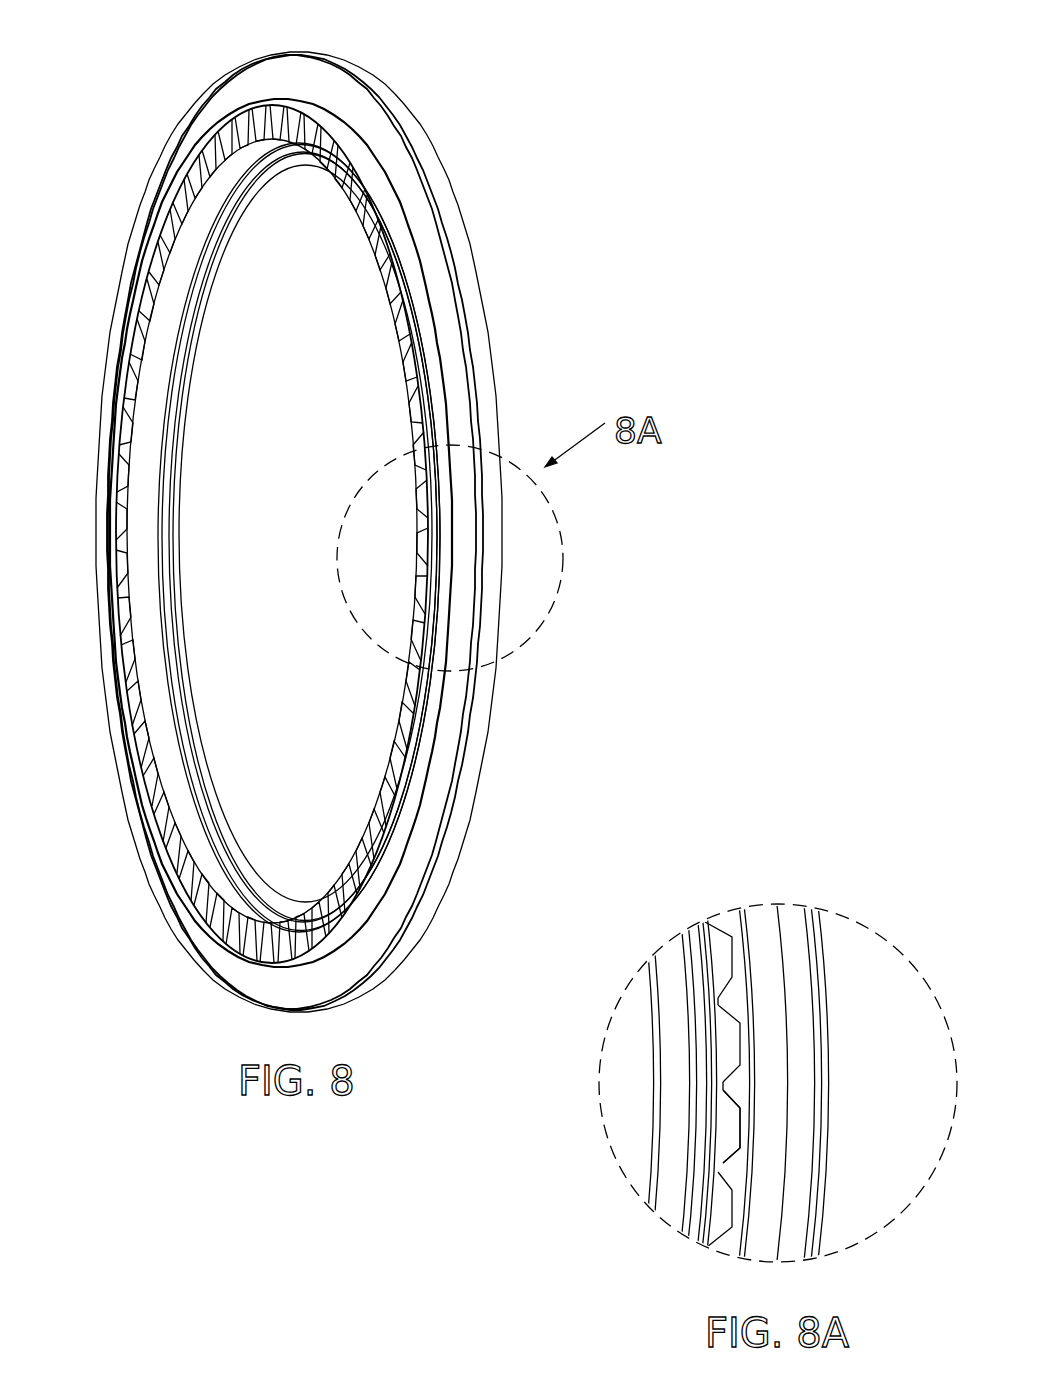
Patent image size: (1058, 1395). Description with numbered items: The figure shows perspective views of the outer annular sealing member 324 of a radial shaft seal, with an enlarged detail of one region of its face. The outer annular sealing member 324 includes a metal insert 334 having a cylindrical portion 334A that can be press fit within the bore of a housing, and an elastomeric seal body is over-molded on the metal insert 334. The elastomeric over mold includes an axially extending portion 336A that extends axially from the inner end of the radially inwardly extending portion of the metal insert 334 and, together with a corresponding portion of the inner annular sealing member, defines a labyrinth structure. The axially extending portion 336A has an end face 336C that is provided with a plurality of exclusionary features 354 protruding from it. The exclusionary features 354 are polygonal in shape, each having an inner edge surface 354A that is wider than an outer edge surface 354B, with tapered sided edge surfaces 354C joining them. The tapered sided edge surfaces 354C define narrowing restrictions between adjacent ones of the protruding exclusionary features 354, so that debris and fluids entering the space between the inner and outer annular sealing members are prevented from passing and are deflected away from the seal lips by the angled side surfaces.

In FIG. 8, the outer annular sealing member 324 is at (284, 508).
In FIG. 8, the metal insert 334 is at (106, 458).
In FIG. 8, the axially extending portion 336A is at (170, 790).
In FIG. 8A, the axially extending portion 336A is at (745, 920).
In FIG. 8A, the end face 336C is at (717, 922).
In FIG. 8, the exclusionary features 354 is at (395, 322).
In FIG. 8A, the exclusionary features 354 is at (715, 958).
In FIG. 8A, the inner edge surface 354A is at (727, 993).
In FIG. 8A, the outer edge surface 354B is at (745, 1128).
In FIG. 8A, the tapered sided edge surfaces 354C is at (735, 1093).
In FIG. 8A, the cylindrical portion 334A is at (806, 1248).